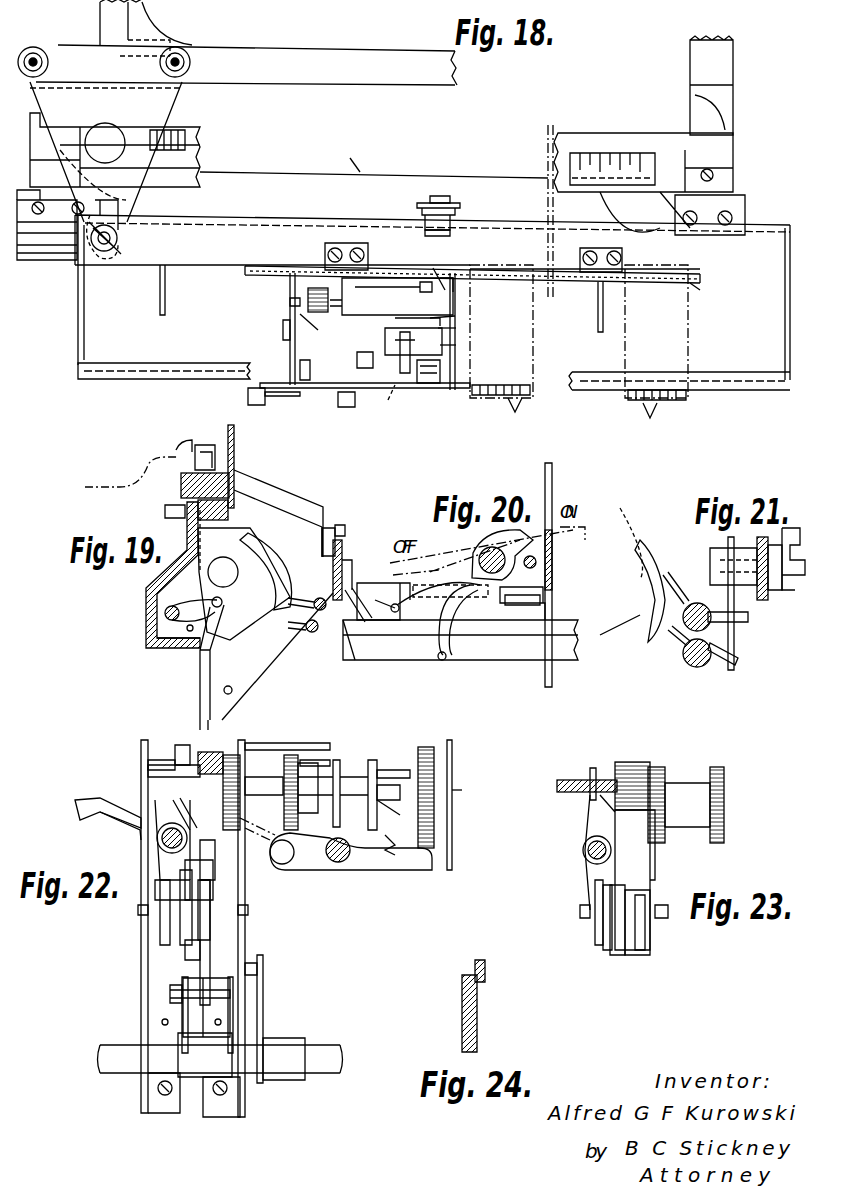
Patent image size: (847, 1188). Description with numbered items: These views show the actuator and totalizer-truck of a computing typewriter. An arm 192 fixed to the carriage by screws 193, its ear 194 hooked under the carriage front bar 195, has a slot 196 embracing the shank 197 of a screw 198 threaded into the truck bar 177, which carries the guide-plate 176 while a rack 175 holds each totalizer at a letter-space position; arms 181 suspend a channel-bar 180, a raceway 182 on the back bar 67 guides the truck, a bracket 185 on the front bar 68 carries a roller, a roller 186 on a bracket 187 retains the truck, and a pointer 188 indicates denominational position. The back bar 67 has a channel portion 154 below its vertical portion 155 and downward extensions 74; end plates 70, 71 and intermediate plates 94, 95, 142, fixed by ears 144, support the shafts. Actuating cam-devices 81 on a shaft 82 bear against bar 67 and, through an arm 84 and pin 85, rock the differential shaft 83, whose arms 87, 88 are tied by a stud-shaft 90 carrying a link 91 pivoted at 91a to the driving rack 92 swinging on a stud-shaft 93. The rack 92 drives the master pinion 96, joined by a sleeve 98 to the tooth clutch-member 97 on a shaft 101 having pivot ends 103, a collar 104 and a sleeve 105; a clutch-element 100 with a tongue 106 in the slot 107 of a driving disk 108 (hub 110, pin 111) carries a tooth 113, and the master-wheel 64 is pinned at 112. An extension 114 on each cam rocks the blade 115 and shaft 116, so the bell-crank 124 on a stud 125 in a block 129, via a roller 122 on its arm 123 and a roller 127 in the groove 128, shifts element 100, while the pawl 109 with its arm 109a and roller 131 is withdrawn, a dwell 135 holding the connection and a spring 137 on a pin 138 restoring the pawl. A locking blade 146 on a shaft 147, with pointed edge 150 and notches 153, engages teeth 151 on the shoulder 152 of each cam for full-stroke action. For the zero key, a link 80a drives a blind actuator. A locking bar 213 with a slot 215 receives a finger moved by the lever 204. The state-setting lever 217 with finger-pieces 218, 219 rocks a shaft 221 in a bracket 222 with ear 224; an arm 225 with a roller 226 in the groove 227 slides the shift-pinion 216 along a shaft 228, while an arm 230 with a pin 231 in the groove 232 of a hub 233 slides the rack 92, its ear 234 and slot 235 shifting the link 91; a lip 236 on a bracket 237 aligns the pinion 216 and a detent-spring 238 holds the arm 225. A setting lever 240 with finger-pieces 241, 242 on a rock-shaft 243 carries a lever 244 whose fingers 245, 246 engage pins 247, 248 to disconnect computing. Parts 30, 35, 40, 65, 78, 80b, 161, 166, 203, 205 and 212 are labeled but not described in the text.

In FIG. 18, the post 30 is at (692, 79).
In FIG. 21, the cam member 35 is at (658, 637).
In FIG. 18, the scale housing 40 is at (643, 162).
In FIG. 22, the gear 64 is at (425, 746).
In FIG. 18, the outline 65 is at (535, 355).
In FIG. 18, the frame 67 is at (360, 168).
In FIG. 19, the frame 67 is at (134, 603).
In FIG. 18, the plate 68 is at (372, 389).
In FIG. 19, the plate 68 is at (343, 586).
In FIG. 21, the plate 68 is at (764, 595).
In FIG. 18, the bar 70 is at (166, 297).
In FIG. 18, the pendulum rod 71 is at (598, 305).
In FIG. 19, the pendulum rod 71 is at (275, 661).
In FIG. 19, the rod 74 is at (200, 713).
In FIG. 19, the bar 78 is at (348, 570).
In FIG. 20, the bar 78 is at (358, 589).
In FIG. 19, the lever arm 80a is at (215, 641).
In FIG. 19, the plate 80b is at (244, 582).
In FIG. 21, the plate 81 is at (620, 632).
In FIG. 24, the plate 81 is at (482, 1010).
In FIG. 19, the pivot 82 is at (191, 605).
In FIG. 22, the shaft 83 is at (115, 1045).
In FIG. 22, the plate 84 is at (264, 983).
In FIG. 22, the block 85 is at (258, 969).
In FIG. 22, the bracket 87 is at (182, 1013).
In FIG. 22, the bracket 88 is at (234, 1011).
In FIG. 22, the member 90 is at (215, 983).
In FIG. 22, the bar 91 is at (205, 946).
In FIG. 22, the bar 91a is at (238, 860).
In FIG. 22, the plate 92 is at (185, 814).
In FIG. 23, the plate 92 is at (652, 851).
In FIG. 22, the screw 93 is at (230, 901).
In FIG. 23, the screw 93 is at (580, 911).
In FIG. 18, the plate 94 is at (290, 364).
In FIG. 22, the plate 94 is at (141, 753).
In FIG. 18, the plate 95 is at (397, 296).
In FIG. 22, the plate 95 is at (246, 746).
In FIG. 22, the gear 96 is at (236, 776).
In FIG. 23, the gear 96 is at (666, 773).
In FIG. 22, the gear 97 is at (292, 754).
In FIG. 23, the gear 97 is at (724, 776).
In FIG. 22, the shaft 98 is at (264, 792).
In FIG. 23, the shaft 98 is at (687, 805).
In FIG. 22, the plate 100 is at (355, 767).
In FIG. 22, the gear 101 is at (315, 824).
In FIG. 22, the member 103 is at (473, 797).
In FIG. 22, the gear 104 is at (315, 786).
In FIG. 22, the pin 105 is at (141, 801).
In FIG. 22, the member 106 is at (395, 780).
In FIG. 22, the arm 107 is at (392, 814).
In FIG. 22, the plate 108 is at (388, 779).
In FIG. 18, the lever 109 is at (458, 328).
In FIG. 22, the lever 109 is at (363, 857).
In FIG. 18, the lever arm 109a is at (386, 335).
In FIG. 22, the lever arm 109a is at (298, 869).
In FIG. 22, the member 110 is at (399, 761).
In FIG. 22, the member 111 is at (410, 826).
In FIG. 22, the member 112 is at (468, 776).
In FIG. 22, the shaft 113 is at (330, 771).
In FIG. 19, the cam 114 is at (275, 553).
In FIG. 21, the cam 114 is at (650, 556).
In FIG. 24, the cam 114 is at (493, 968).
In FIG. 19, the arm 115 is at (300, 631).
In FIG. 20, the arm 115 is at (402, 640).
In FIG. 21, the arm 115 is at (675, 643).
In FIG. 19, the roller 116 is at (316, 642).
In FIG. 20, the roller 116 is at (460, 640).
In FIG. 21, the roller 116 is at (690, 666).
In FIG. 18, the block 122 is at (431, 381).
In FIG. 18, the member 123 is at (458, 346).
In FIG. 18, the member 124 is at (424, 380).
In FIG. 18, the pivot 125 is at (320, 355).
In FIG. 22, the pivot 125 is at (345, 862).
In FIG. 18, the member 127 is at (413, 352).
In FIG. 22, the member 128 is at (370, 773).
In FIG. 18, the member 129 is at (410, 376).
In FIG. 18, the stud 131 is at (357, 364).
In FIG. 22, the stud 131 is at (282, 866).
In FIG. 19, the cam edge 135 is at (284, 567).
In FIG. 24, the cam edge 135 is at (477, 961).
In FIG. 22, the spring 137 is at (402, 849).
In FIG. 24, the spring 137 is at (462, 976).
In FIG. 18, the member 138 is at (414, 311).
In FIG. 22, the member 138 is at (392, 861).
In FIG. 18, the plate 142 is at (456, 358).
In FIG. 22, the plate 142 is at (453, 851).
In FIG. 22, the foot 144 is at (165, 1113).
In FIG. 19, the arm 146 is at (302, 599).
In FIG. 20, the arm 146 is at (382, 590).
In FIG. 21, the arm 146 is at (676, 595).
In FIG. 19, the roller 147 is at (314, 630).
In FIG. 20, the roller 147 is at (517, 604).
In FIG. 21, the roller 147 is at (699, 606).
In FIG. 19, the cam surface 150 is at (288, 607).
In FIG. 21, the cam surface 150 is at (652, 602).
In FIG. 21, the cam surface 151 is at (645, 544).
In FIG. 24, the surface 152 is at (462, 985).
In FIG. 20, the member 153 is at (522, 607).
In FIG. 18, the frame wall 154 is at (410, 176).
In FIG. 19, the frame wall 154 is at (147, 637).
In FIG. 18, the frame wall 155 is at (355, 224).
In FIG. 19, the frame wall 155 is at (186, 561).
In FIG. 19, the frame bottom 161 is at (175, 649).
In FIG. 20, the frame bottom 161 is at (553, 575).
In FIG. 19, the opening 166 is at (238, 573).
In FIG. 18, the rail 175 is at (700, 288).
In FIG. 18, the rail 176 is at (262, 268).
In FIG. 19, the rail 176 is at (234, 451).
In FIG. 18, the block 177 is at (529, 253).
In FIG. 19, the block 177 is at (181, 483).
In FIG. 18, the plate 180 is at (158, 379).
In FIG. 19, the plate 180 is at (340, 528).
In FIG. 18, the plate 181 is at (78, 331).
In FIG. 19, the plate 181 is at (305, 501).
In FIG. 18, the block 182 is at (55, 262).
In FIG. 19, the block 182 is at (163, 504).
In FIG. 19, the block 185 is at (226, 513).
In FIG. 18, the bracket 186 is at (435, 236).
In FIG. 19, the bracket 186 is at (195, 449).
In FIG. 18, the bracket 187 is at (458, 208).
In FIG. 19, the bracket 187 is at (146, 438).
In FIG. 18, the bracket 188 is at (440, 200).
In FIG. 18, the arm 192 is at (106, 152).
In FIG. 19, the arm 192 is at (142, 457).
In FIG. 18, the roller 193 is at (34, 52).
In FIG. 18, the member 194 is at (146, 28).
In FIG. 19, the member 194 is at (352, 532).
In FIG. 18, the arm 195 is at (246, 65).
In FIG. 18, the member 196 is at (122, 212).
In FIG. 19, the member 196 is at (202, 454).
In FIG. 18, the member 197 is at (108, 256).
In FIG. 18, the pivot 198 is at (118, 241).
In FIG. 19, the pivot 198 is at (197, 450).
In FIG. 18, the comb 203 is at (579, 411).
In FIG. 22, the comb 203 is at (141, 777).
In FIG. 18, the member 204 is at (458, 318).
In FIG. 18, the member 205 is at (427, 270).
In FIG. 18, the member 212 is at (456, 289).
In FIG. 18, the plate 213 is at (362, 292).
In FIG. 22, the plate 213 is at (312, 743).
In FIG. 18, the bracket 215 is at (417, 286).
In FIG. 18, the gear 216 is at (322, 312).
In FIG. 22, the gear 216 is at (213, 749).
In FIG. 23, the gear 216 is at (636, 763).
In FIG. 18, the plate 217 is at (280, 396).
In FIG. 22, the plate 217 is at (100, 829).
In FIG. 18, the foot 218 is at (248, 399).
In FIG. 22, the foot 218 is at (90, 799).
In FIG. 18, the foot 219 is at (345, 407).
In FIG. 22, the foot 219 is at (261, 825).
In FIG. 18, the hub 221 is at (310, 363).
In FIG. 22, the hub 221 is at (157, 846).
In FIG. 23, the hub 221 is at (585, 853).
In FIG. 22, the arm 222 is at (120, 834).
In FIG. 22, the block 224 is at (155, 881).
In FIG. 22, the arm 225 is at (155, 811).
In FIG. 23, the arm 225 is at (585, 831).
In FIG. 22, the pin 226 is at (200, 743).
In FIG. 23, the pin 226 is at (598, 769).
In FIG. 18, the pin 227 is at (282, 295).
In FIG. 22, the pin 227 is at (181, 794).
In FIG. 23, the pin 227 is at (625, 761).
In FIG. 18, the shaft 228 is at (326, 263).
In FIG. 22, the shaft 228 is at (170, 764).
In FIG. 23, the shaft 228 is at (580, 783).
In FIG. 22, the bar 230 is at (213, 865).
In FIG. 23, the bar 230 is at (595, 885).
In FIG. 23, the pin 231 is at (598, 916).
In FIG. 22, the bar 232 is at (180, 941).
In FIG. 23, the bar 232 is at (612, 951).
In FIG. 22, the bar 233 is at (160, 931).
In FIG. 23, the bar 233 is at (603, 941).
In FIG. 22, the bar 234 is at (189, 956).
In FIG. 23, the bar 234 is at (638, 956).
In FIG. 22, the slot 235 is at (216, 910).
In FIG. 23, the slot 235 is at (645, 936).
In FIG. 18, the pin 236 is at (310, 330).
In FIG. 22, the pin 236 is at (141, 769).
In FIG. 23, the pin 236 is at (566, 804).
In FIG. 18, the bracket 237 is at (274, 331).
In FIG. 22, the pin 238 is at (182, 746).
In FIG. 20, the hub 240 is at (476, 541).
In FIG. 21, the hub 240 is at (770, 541).
In FIG. 20, the lever 241 is at (456, 552).
In FIG. 21, the lever 241 is at (783, 597).
In FIG. 20, the pivot 242 is at (572, 527).
In FIG. 21, the pivot 242 is at (790, 531).
In FIG. 20, the disc 243 is at (479, 566).
In FIG. 21, the disc 243 is at (793, 559).
In FIG. 20, the spring 244 is at (458, 619).
In FIG. 21, the spring 244 is at (728, 581).
In FIG. 20, the arm 245 is at (450, 658).
In FIG. 21, the arm 245 is at (740, 661).
In FIG. 20, the arm 246 is at (392, 612).
In FIG. 21, the arm 246 is at (740, 615).
In FIG. 20, the bar 247 is at (440, 660).
In FIG. 21, the bar 247 is at (731, 670).
In FIG. 20, the link 248 is at (435, 603).
In FIG. 21, the link 248 is at (748, 623).